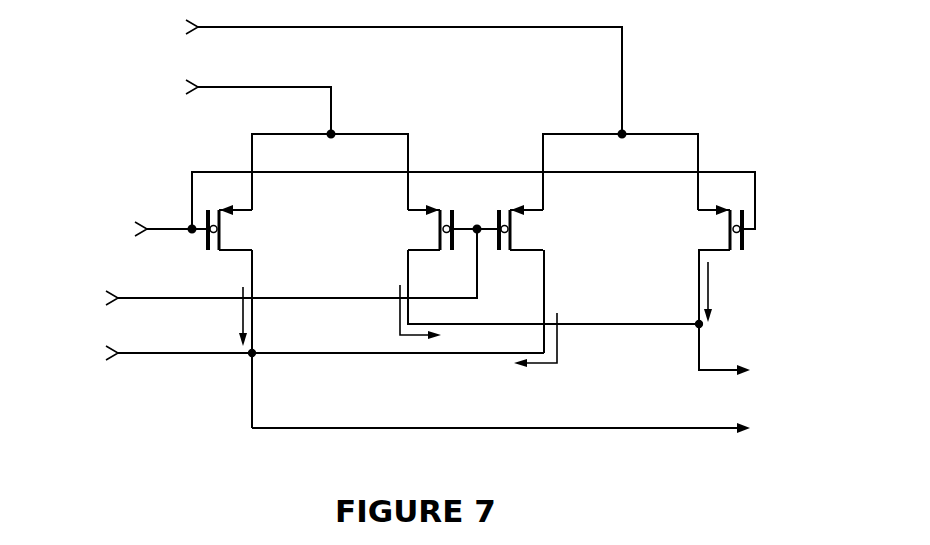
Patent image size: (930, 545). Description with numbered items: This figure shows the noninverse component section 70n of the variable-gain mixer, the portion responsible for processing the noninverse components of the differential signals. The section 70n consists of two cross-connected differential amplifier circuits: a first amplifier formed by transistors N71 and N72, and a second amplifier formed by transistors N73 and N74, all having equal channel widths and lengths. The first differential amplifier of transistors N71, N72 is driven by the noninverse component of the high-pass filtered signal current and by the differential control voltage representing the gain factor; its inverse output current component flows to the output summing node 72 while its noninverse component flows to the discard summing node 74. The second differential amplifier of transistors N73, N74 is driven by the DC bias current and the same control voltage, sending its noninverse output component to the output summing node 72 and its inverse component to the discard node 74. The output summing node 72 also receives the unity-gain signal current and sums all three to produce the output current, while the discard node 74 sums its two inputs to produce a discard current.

The noninverse component section 70n is at (428, 262).
The output summing node 72 is at (247, 356).
The discard summing node 74 is at (702, 328).
The transistor N71 is at (259, 230).
The transistor N72 is at (395, 230).
The transistor N73 is at (551, 230).
The transistor N74 is at (684, 230).